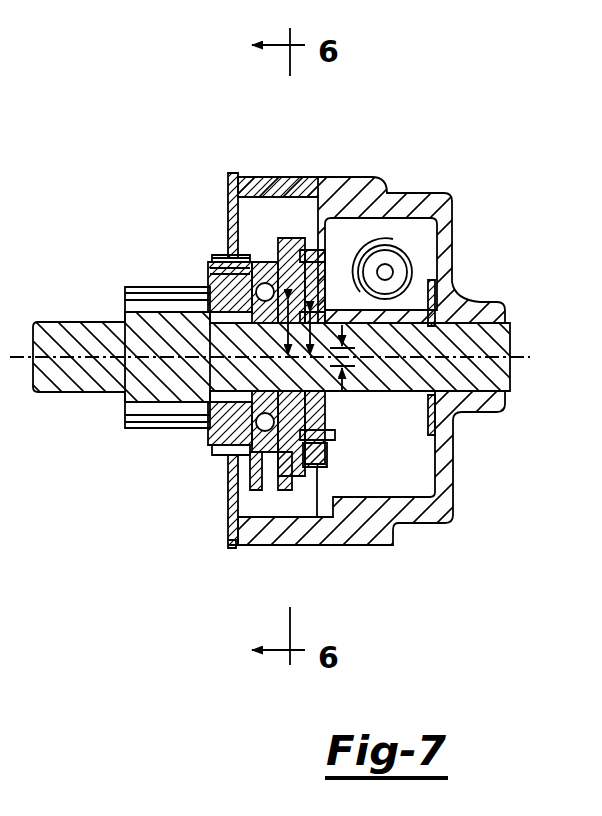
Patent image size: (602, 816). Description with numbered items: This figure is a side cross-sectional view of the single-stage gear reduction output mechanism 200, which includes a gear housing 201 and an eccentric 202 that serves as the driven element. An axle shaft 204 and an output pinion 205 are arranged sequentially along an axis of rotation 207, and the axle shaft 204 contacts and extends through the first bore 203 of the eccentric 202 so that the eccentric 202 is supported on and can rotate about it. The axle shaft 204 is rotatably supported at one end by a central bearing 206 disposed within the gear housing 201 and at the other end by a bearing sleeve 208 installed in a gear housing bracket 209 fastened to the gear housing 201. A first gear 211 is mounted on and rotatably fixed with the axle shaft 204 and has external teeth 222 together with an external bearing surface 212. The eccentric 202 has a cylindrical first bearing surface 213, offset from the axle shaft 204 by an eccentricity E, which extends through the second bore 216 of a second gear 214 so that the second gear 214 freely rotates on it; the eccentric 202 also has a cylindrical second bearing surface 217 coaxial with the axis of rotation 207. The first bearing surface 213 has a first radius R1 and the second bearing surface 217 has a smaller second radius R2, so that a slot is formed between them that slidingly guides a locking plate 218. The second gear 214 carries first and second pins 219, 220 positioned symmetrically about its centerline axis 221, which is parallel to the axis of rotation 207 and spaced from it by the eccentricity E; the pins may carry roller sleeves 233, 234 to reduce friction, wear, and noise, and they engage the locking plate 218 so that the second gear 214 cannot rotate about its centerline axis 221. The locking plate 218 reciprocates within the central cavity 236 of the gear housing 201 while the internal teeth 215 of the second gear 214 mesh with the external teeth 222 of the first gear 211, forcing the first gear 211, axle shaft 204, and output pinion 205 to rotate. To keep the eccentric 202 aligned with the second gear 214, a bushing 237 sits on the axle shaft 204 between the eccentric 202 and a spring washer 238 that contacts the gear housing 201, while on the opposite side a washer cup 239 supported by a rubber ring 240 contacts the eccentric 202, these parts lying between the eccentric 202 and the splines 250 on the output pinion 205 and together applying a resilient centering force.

The single-stage gear reduction output mechanism 200 is at (85, 95).
The gear housing 201 is at (422, 205).
The eccentric 202 is at (460, 430).
The first bore 203 is at (455, 372).
The axle shaft 204 is at (46, 395).
The output pinion 205 is at (122, 298).
The central bearing 206 is at (478, 305).
The axis of rotation 207 is at (518, 345).
The bearing sleeve 208 is at (222, 268).
The gear housing bracket 209 is at (240, 185).
The first gear 211 is at (222, 280).
The external bearing surface 212 is at (215, 460).
The first bearing surface 213 is at (280, 328).
The second gear 214 is at (288, 240).
The internal teeth 215 is at (240, 200).
The second bore 216 is at (290, 468).
The second bearing surface 217 is at (382, 262).
The locking plate 218 is at (312, 520).
The first pin 219 is at (315, 270).
The second pin 220 is at (385, 532).
The centerline axis 221 is at (485, 338).
The external teeth 222 is at (228, 256).
The roller sleeve 233 is at (300, 290).
The roller sleeve 234 is at (338, 440).
The central cavity 236 is at (245, 550).
The bushing 237 is at (445, 400).
The spring washer 238 is at (433, 285).
The washer cup 239 is at (258, 200).
The rubber ring 240 is at (225, 325).
The splines 250 is at (180, 388).
The first radius R1 is at (288, 355).
The second radius R2 is at (310, 355).
The eccentricity E is at (344, 355).